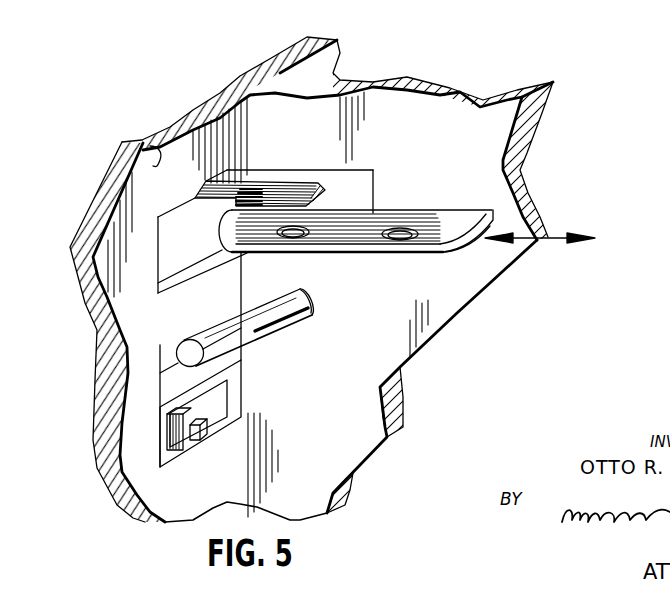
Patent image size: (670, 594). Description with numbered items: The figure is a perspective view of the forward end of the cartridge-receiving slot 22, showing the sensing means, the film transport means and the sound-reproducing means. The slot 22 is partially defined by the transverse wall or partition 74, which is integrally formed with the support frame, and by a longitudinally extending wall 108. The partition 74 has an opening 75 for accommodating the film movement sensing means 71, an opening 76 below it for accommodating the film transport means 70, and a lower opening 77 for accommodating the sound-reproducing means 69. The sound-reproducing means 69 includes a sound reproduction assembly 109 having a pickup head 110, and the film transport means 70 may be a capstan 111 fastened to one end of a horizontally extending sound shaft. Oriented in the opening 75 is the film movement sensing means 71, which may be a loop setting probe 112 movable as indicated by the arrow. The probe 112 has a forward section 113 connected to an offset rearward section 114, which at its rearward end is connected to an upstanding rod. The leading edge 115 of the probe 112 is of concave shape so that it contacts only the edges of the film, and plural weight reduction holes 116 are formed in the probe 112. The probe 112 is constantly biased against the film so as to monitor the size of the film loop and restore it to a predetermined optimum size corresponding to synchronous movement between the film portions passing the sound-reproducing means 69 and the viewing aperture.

The cartridge-receiving slot 22 is at (485, 140).
The sound-reproducing means 69 is at (253, 412).
The film transport means 70 is at (194, 317).
The film movement sensing means 71 is at (258, 192).
The transverse wall or partition 74 is at (123, 142).
The opening 75 is at (357, 185).
The opening 76 is at (177, 342).
The lower opening 77 is at (241, 380).
The longitudinally extending wall 108 is at (470, 273).
The sound reproduction assembly 109 is at (174, 441).
The pickup head 110 is at (198, 436).
The capstan 111 is at (300, 323).
The loop setting probe 112 is at (457, 213).
The forward section 113 is at (400, 252).
The offset rearward section 114 is at (229, 193).
The leading edge 115 is at (490, 218).
The weight reduction holes 116 is at (347, 255).